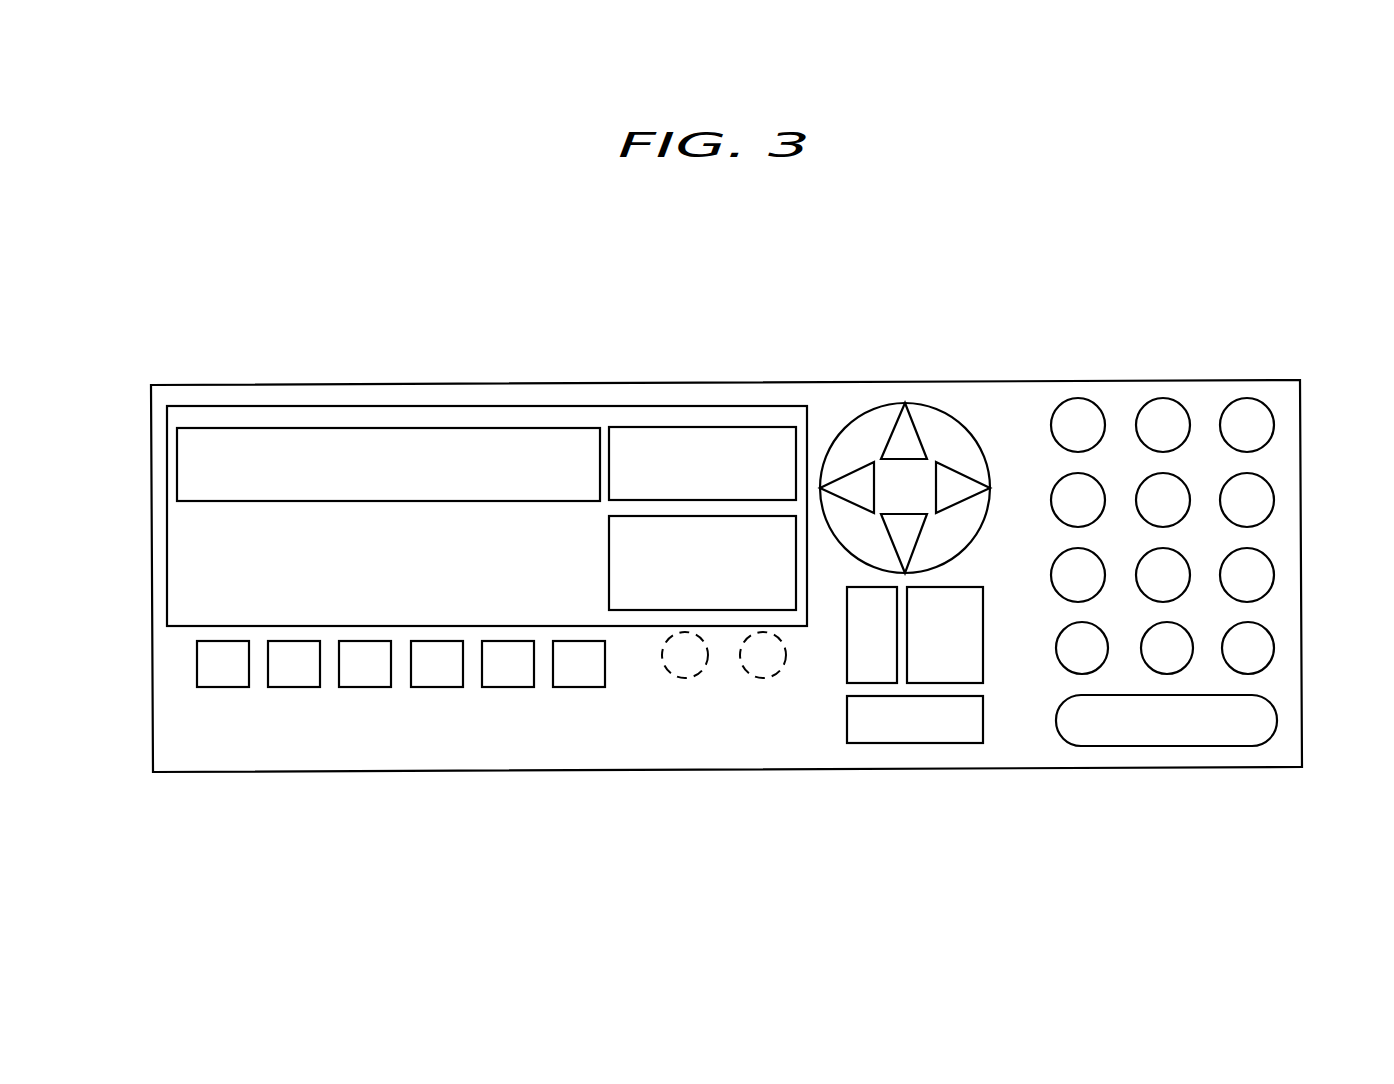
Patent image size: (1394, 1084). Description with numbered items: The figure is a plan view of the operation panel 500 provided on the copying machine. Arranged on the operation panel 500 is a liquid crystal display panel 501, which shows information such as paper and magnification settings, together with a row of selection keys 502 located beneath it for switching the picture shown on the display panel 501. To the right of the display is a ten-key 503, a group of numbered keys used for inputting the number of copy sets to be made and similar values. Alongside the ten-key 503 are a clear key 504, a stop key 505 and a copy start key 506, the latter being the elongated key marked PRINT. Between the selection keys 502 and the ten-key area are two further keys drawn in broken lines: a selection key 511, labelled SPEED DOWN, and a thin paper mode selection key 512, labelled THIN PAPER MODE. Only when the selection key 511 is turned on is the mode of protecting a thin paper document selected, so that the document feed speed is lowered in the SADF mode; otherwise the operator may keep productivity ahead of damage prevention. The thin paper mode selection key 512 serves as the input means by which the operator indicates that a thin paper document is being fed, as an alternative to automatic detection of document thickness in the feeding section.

The operation panel 500 is at (967, 313).
The liquid crystal display panel 501 is at (468, 420).
The selection key 502 is at (401, 691).
The ten-key 503 is at (1267, 527).
The clear key 504 is at (1056, 641).
The stop key 505 is at (1275, 641).
The copy start key 506 is at (1277, 705).
The selection key 511 is at (666, 661).
The thin paper mode selection key 512 is at (783, 668).